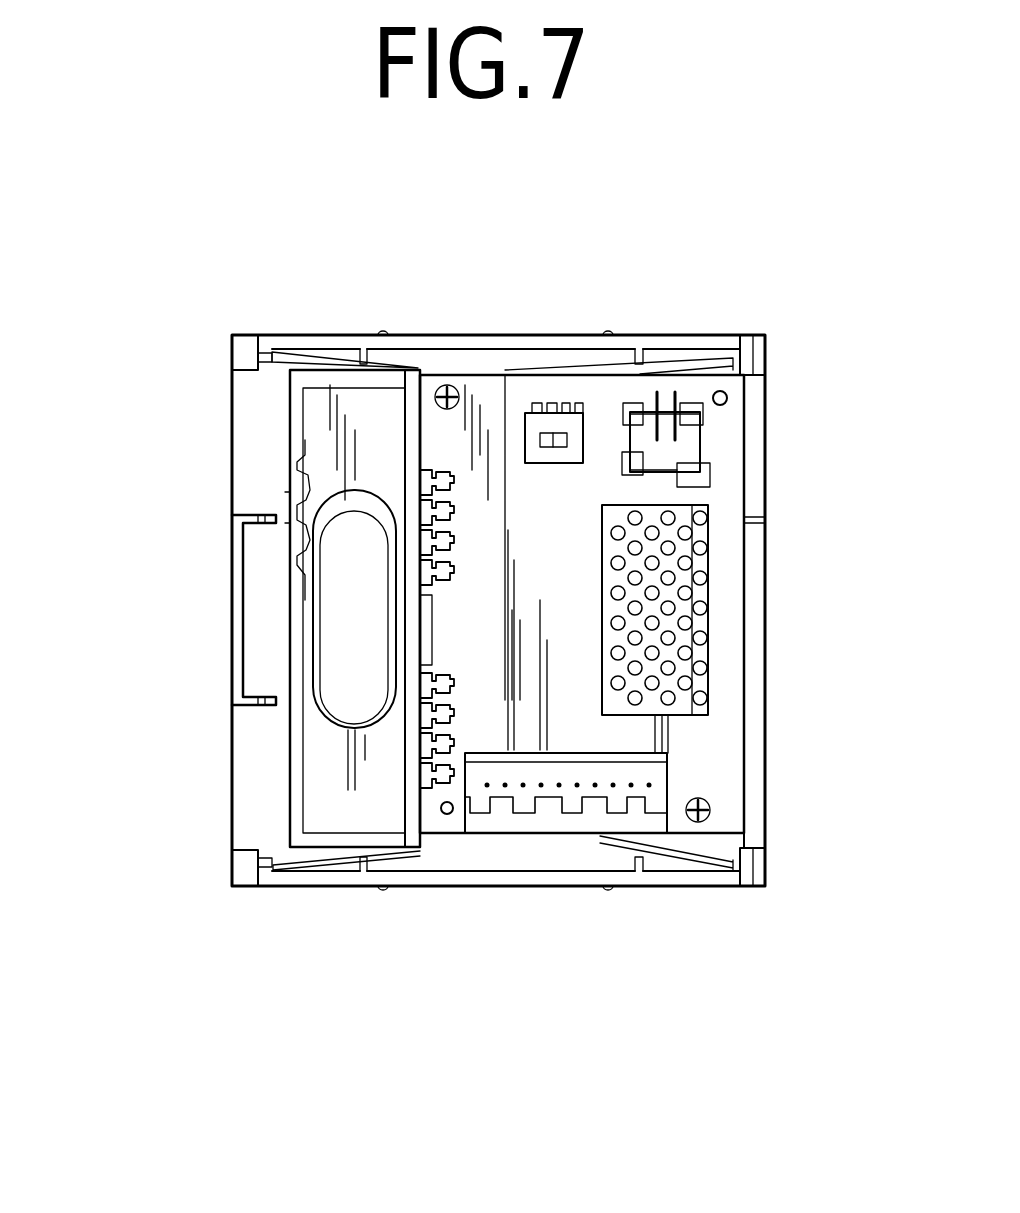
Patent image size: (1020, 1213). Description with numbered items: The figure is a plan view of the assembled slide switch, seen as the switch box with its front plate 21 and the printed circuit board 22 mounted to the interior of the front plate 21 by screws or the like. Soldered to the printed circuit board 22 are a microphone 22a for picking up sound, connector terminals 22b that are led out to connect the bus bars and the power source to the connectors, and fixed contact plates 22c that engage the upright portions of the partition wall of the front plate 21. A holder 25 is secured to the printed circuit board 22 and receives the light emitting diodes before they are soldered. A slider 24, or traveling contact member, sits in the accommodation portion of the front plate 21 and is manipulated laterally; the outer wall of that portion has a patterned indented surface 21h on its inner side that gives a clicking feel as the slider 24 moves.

The front plate 21 is at (773, 338).
The patterned indented surface 21h is at (300, 462).
The printed circuit board 22 is at (724, 496).
The microphone 22a is at (688, 605).
The connector terminals 22b is at (590, 808).
The fixed contact plates 22c is at (443, 485).
The slider 24 is at (320, 632).
The holder 25 is at (703, 443).